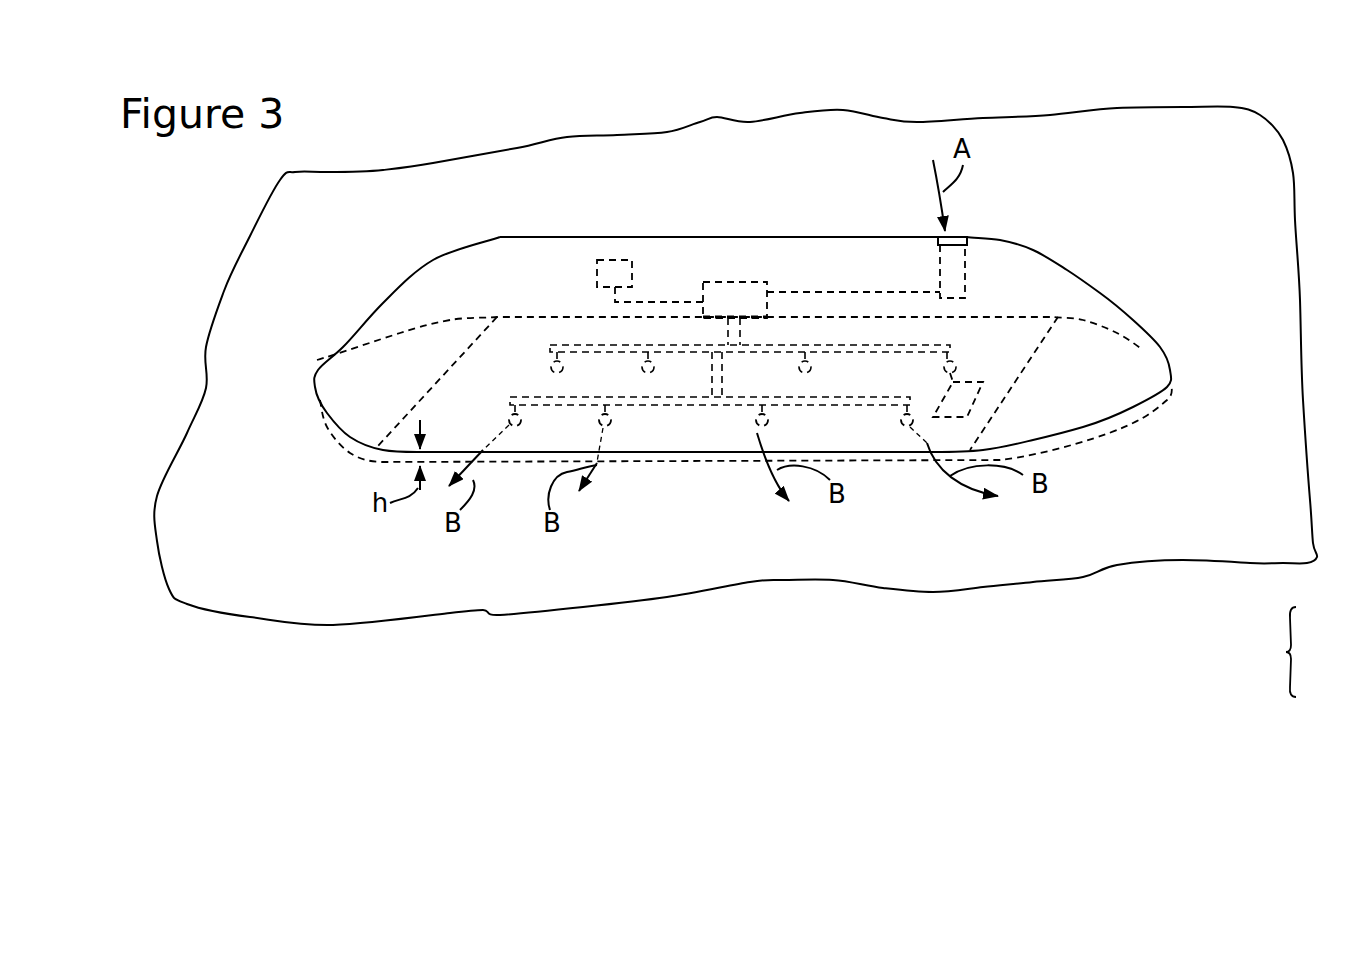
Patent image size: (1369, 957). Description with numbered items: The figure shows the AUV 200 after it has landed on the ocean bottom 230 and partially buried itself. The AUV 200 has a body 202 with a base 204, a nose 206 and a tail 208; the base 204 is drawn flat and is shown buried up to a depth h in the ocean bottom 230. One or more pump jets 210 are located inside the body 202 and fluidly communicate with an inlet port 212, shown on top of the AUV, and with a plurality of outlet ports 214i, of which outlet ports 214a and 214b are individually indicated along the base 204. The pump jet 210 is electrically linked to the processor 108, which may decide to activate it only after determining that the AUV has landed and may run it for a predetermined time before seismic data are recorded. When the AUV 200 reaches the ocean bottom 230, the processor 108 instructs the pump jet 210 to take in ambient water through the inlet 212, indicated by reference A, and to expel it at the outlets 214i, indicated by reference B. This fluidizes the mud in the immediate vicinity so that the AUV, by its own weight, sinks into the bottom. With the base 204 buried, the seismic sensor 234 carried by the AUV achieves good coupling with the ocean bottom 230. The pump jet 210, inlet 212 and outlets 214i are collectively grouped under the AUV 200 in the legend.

The processor 108 is at (618, 258).
The AUV 200 is at (750, 77).
The body 202 is at (867, 237).
The base 204 is at (705, 437).
The nose 206 is at (1127, 400).
The tail 208 is at (347, 403).
The pump jet 210 is at (735, 280).
The inlet port 212 is at (960, 237).
The outlet port 214a is at (503, 422).
The outlet port 214b is at (613, 425).
The outlet ports 214i is at (907, 428).
The ocean bottom 230 is at (1183, 125).
The seismic sensor 234 is at (973, 395).